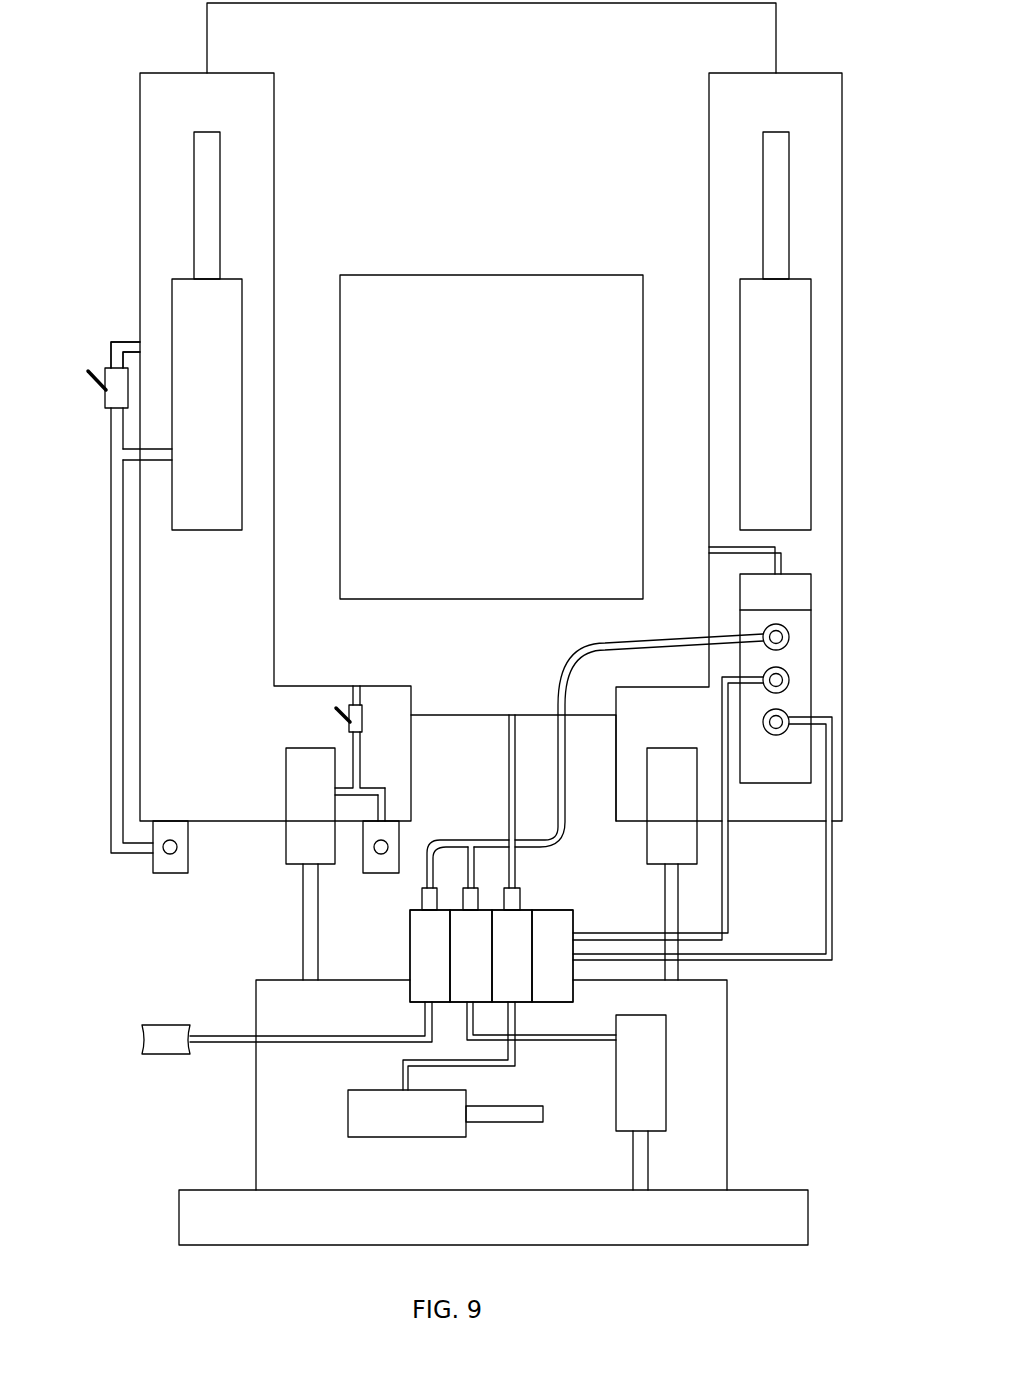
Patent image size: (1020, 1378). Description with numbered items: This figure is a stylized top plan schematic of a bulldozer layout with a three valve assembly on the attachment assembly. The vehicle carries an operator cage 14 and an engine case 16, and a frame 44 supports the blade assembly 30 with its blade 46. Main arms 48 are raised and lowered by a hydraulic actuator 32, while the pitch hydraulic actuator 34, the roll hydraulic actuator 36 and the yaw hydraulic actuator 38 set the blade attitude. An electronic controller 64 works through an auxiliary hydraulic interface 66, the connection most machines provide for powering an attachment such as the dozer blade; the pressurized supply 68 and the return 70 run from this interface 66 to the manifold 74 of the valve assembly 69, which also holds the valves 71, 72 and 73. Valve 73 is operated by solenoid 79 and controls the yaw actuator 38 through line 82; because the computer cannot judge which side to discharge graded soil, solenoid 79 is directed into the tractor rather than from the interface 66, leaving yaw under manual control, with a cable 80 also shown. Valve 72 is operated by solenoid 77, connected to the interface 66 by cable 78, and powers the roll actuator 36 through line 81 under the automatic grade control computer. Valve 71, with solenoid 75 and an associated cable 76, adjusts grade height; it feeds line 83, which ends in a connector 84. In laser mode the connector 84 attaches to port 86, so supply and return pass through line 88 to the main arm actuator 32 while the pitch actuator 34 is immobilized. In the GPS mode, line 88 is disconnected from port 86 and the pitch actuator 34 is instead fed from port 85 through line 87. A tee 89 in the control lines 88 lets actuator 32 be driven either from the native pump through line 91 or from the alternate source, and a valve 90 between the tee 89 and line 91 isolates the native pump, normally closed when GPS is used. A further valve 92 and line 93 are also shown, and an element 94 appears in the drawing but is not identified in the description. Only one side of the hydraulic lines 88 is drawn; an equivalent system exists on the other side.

The operator cage 14 is at (481, 300).
The engine case 16 is at (762, 30).
The blade assembly 30 is at (738, 1048).
The hydraulic actuator 32 is at (198, 297).
The pitch hydraulic actuator 34 is at (300, 843).
The roll hydraulic actuator 36 is at (650, 1082).
The yaw hydraulic actuator 38 is at (370, 1108).
The frame 44 is at (270, 1152).
The blade 46 is at (808, 1222).
The main arm 48 is at (165, 160).
The electronic controller 64 is at (793, 590).
The interface 66 is at (812, 668).
The supply 68 is at (727, 903).
The valve assembly 69 is at (586, 924).
The return 70 is at (832, 867).
The valve 71 is at (417, 972).
The valve 72 is at (458, 972).
The valve 73 is at (499, 972).
The manifold 74 is at (539, 972).
The solenoid 75 is at (425, 896).
The cable 76 is at (425, 870).
The solenoid 77 is at (472, 897).
The cable 78 is at (465, 870).
The solenoid 79 is at (512, 900).
The cable 80 is at (507, 728).
The line 81 is at (585, 1045).
The line 82 is at (400, 1078).
The line 83 is at (223, 1048).
The connector 84 is at (140, 1040).
The port 85 is at (381, 876).
The port 86 is at (170, 876).
The line 87 is at (380, 792).
The line 88 is at (111, 630).
The tee 89 is at (118, 455).
The valve 90 is at (95, 383).
The line 91 is at (118, 346).
The valve 92 is at (370, 688).
The line 93 is at (340, 700).
The pipe 94 is at (348, 805).